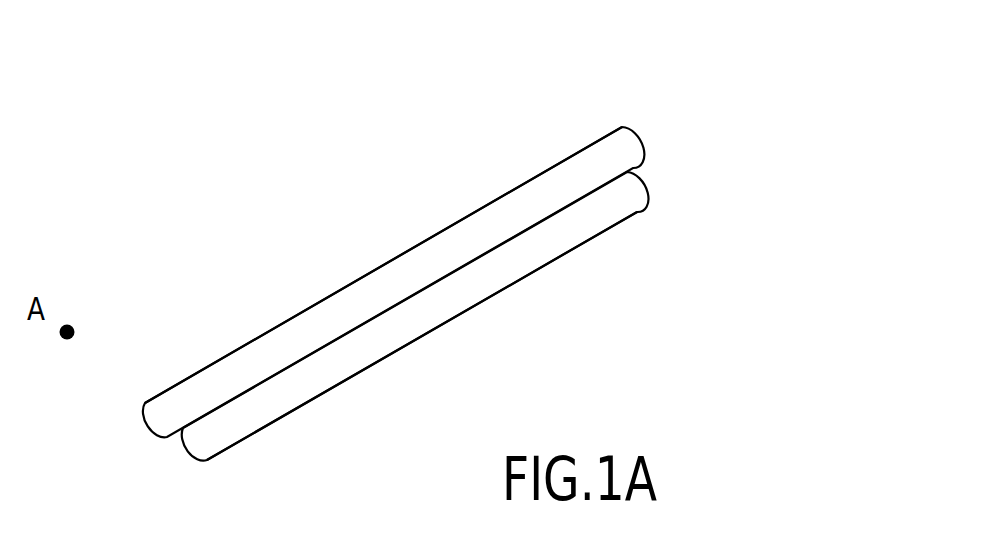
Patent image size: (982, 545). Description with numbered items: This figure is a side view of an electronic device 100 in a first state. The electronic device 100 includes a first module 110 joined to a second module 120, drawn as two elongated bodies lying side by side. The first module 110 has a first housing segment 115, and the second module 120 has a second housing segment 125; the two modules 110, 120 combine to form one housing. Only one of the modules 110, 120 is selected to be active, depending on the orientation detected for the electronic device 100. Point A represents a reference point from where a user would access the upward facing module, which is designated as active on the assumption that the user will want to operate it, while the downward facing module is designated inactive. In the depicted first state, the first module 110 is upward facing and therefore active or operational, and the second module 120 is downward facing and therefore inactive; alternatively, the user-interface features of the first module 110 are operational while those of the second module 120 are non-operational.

The electronic device 100 is at (451, 236).
The first module 110 is at (393, 282).
The first housing segment 115 is at (420, 242).
The second module 120 is at (420, 316).
The second housing segment 125 is at (565, 253).